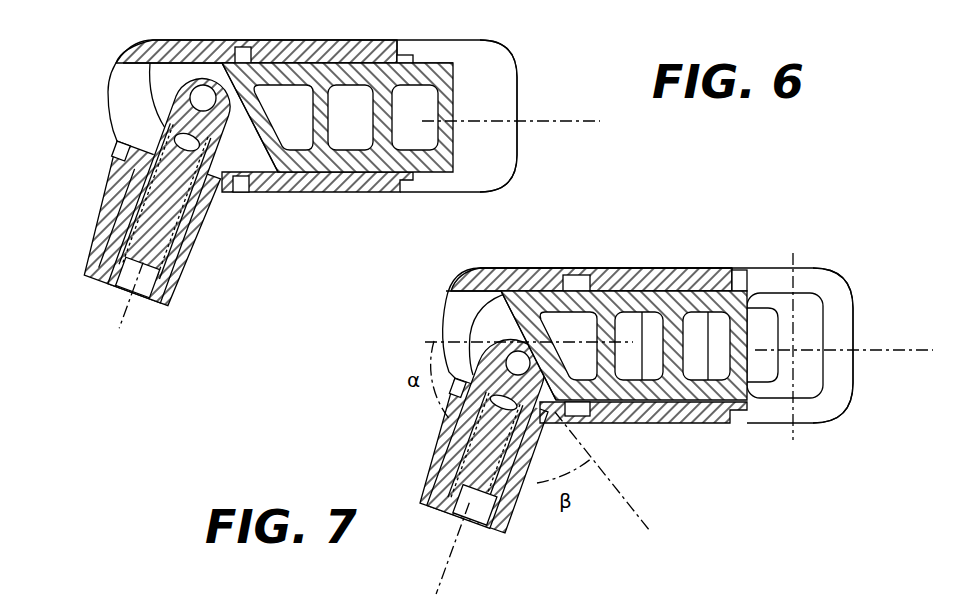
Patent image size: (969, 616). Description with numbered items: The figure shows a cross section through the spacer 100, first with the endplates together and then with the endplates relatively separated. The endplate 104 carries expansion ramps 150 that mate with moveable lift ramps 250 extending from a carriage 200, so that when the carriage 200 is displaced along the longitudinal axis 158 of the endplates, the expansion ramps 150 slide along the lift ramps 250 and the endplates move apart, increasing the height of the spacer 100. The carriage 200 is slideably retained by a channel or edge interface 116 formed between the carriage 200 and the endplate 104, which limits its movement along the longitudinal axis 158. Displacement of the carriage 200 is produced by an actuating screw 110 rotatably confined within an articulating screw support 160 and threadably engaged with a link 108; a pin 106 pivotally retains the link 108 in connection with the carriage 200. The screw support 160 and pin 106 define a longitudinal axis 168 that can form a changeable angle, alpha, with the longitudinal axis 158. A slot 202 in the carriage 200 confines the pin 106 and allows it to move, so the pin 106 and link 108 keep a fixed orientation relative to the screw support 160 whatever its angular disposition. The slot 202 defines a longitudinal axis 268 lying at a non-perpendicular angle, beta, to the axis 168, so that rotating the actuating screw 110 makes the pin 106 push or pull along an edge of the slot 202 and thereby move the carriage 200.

In FIG. 6, the spacer 100 is at (535, 150).
In FIG. 7, the spacer 100 is at (665, 245).
In FIG. 6, the endplate 104 is at (447, 192).
In FIG. 7, the endplate 104 is at (815, 420).
In FIG. 6, the pin 106 is at (191, 96).
In FIG. 7, the pin 106 is at (508, 356).
In FIG. 6, the link 108 is at (222, 212).
In FIG. 6, the actuating screw 110 is at (195, 265).
In FIG. 7, the actuating screw 110 is at (447, 490).
In FIG. 7, the channel or edge interface 116 is at (684, 278).
In FIG. 7, the expansion ramps 150 is at (580, 423).
In FIG. 6, the longitudinal axis 158 is at (539, 110).
In FIG. 7, the longitudinal axis 158 is at (416, 337).
In FIG. 6, the articulating screw support 160 is at (94, 185).
In FIG. 7, the articulating screw support 160 is at (420, 430).
In FIG. 6, the longitudinal axis 168 is at (128, 328).
In FIG. 7, the longitudinal axis 168 is at (468, 552).
In FIG. 6, the carriage 200 is at (443, 66).
In FIG. 7, the carriage 200 is at (624, 345).
In FIG. 6, the slot 202 is at (246, 152).
In FIG. 7, the slot 202 is at (508, 315).
In FIG. 7, the lift ramps 250 is at (745, 272).
In FIG. 7, the longitudinal axis 268 is at (648, 518).